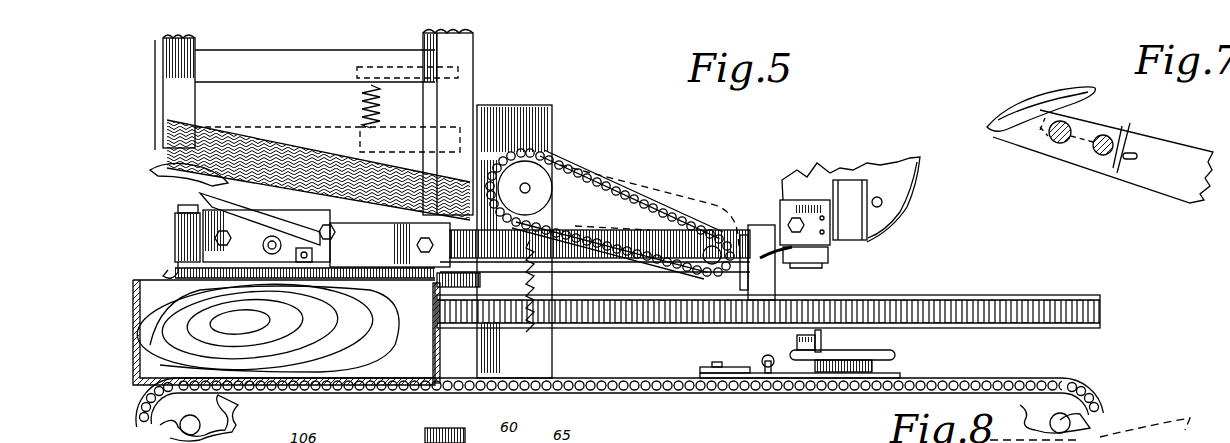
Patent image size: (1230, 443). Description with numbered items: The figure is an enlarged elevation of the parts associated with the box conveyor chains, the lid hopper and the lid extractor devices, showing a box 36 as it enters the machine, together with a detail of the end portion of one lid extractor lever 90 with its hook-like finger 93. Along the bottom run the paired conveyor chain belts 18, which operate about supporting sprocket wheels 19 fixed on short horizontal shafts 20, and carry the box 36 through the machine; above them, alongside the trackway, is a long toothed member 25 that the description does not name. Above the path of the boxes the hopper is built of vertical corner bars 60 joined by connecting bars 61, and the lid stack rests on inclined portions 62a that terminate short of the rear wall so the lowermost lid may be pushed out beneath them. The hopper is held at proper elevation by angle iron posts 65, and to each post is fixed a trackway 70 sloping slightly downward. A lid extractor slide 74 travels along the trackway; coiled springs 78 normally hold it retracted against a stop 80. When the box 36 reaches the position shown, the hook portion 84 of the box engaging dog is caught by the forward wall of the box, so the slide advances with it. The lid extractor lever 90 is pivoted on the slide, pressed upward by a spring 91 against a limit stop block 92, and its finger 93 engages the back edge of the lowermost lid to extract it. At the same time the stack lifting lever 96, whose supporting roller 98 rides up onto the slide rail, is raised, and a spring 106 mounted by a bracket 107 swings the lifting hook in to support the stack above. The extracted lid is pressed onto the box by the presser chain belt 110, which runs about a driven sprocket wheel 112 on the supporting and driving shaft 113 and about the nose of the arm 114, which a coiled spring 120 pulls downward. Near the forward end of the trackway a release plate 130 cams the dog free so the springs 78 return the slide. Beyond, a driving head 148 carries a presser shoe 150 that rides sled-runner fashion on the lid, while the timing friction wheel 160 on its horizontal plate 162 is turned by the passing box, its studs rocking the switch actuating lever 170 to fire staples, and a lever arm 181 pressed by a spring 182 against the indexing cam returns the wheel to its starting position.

In FIG. 5, the conveyor chain belt 18 is at (614, 390).
In FIG. 5, the supporting sprocket wheel 19 is at (232, 402).
In FIG. 5, the horizontal shaft 20 is at (168, 424).
In FIG. 5, the rack 25 is at (993, 298).
In FIG. 5, the box 36 is at (133, 296).
In FIG. 5, the vertical corner bar 60 is at (160, 68).
In FIG. 5, the connecting bar 61 is at (200, 89).
In FIG. 5, the inclined portion 62a is at (175, 219).
In FIG. 5, the angle iron post 65 is at (548, 110).
In FIG. 5, the trackway 70 is at (572, 270).
In FIG. 5, the lid extractor slide 74 is at (372, 283).
In FIG. 5, the coiled spring 78 is at (248, 283).
In FIG. 5, the stop 80 is at (175, 236).
In FIG. 5, the hook portion 84 is at (432, 315).
In FIG. 5, the lid extractor lever 90 is at (203, 200).
In FIG. 7, the lid extractor lever 90 is at (1152, 175).
In FIG. 5, the spring 91 is at (262, 246).
In FIG. 5, the limit stop block 92 is at (320, 283).
In FIG. 5, the hook-like finger 93 is at (160, 169).
In FIG. 7, the hook-like finger 93 is at (1045, 95).
In FIG. 5, the stack lifting lever 96 is at (415, 135).
In FIG. 5, the supporting roller 98 is at (480, 195).
In FIG. 5, the spring 106 is at (360, 95).
In FIG. 5, the bracket 107 is at (355, 62).
In FIG. 5, the presser chain belt 110 is at (625, 216).
In FIG. 5, the driven sprocket wheel 112 is at (548, 162).
In FIG. 5, the supporting and driving shaft 113 is at (535, 182).
In FIG. 5, the arm 114 is at (660, 216).
In FIG. 5, the coiled spring 120 is at (558, 328).
In FIG. 5, the release plate 130 is at (770, 283).
In FIG. 5, the driving head 148 is at (815, 182).
In FIG. 5, the presser shoe 150 is at (835, 257).
In FIG. 5, the friction wheel 160 is at (880, 352).
In FIG. 5, the horizontal plate 162 is at (890, 374).
In FIG. 5, the switch actuating lever 170 is at (797, 343).
In FIG. 5, the lever arm 181 is at (742, 376).
In FIG. 5, the spring 182 is at (776, 368).